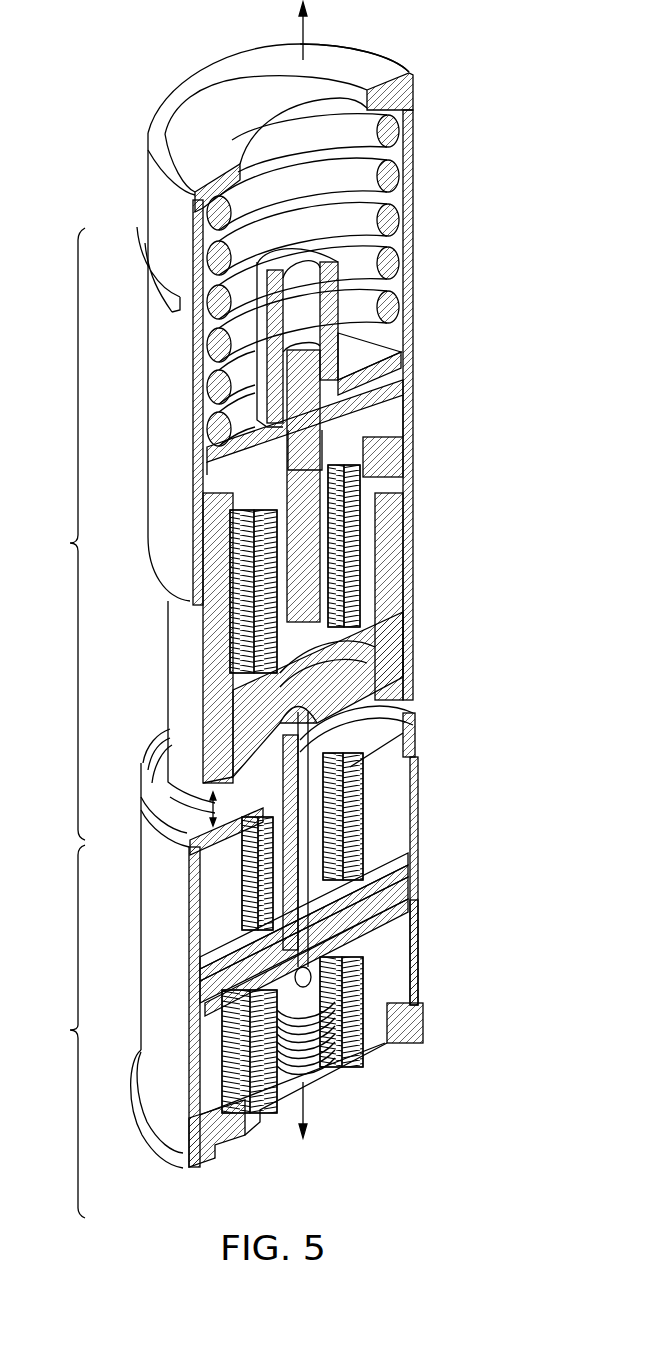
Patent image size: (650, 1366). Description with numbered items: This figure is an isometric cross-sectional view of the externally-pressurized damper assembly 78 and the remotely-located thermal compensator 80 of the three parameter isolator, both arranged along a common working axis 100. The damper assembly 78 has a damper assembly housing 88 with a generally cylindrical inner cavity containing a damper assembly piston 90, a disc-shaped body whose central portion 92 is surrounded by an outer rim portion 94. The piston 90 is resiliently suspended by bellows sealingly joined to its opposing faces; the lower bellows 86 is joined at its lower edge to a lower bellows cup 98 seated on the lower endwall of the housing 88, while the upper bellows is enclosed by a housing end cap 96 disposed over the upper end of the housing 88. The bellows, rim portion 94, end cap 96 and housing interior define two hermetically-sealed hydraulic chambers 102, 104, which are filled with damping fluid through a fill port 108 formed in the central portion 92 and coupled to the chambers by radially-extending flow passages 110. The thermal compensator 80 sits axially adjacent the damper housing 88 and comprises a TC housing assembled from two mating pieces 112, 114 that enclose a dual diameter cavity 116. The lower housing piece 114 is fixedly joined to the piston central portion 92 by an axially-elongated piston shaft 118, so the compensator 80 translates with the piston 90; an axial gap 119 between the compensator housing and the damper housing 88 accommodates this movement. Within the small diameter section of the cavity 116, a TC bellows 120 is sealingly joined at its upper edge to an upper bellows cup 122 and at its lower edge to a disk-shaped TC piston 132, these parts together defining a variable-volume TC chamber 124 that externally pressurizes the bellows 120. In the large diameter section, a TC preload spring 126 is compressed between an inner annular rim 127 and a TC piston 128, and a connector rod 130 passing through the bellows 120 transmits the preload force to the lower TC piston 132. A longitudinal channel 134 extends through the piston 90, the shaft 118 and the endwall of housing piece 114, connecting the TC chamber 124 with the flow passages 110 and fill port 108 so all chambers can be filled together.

The damper assembly 78 is at (57, 1031).
The thermal compensator 80 is at (57, 534).
The second bellows 86 is at (361, 1027).
The damper assembly housing 88 is at (413, 790).
The damper assembly piston 90 is at (397, 866).
The central portion 92 is at (371, 932).
The outer rim portion 94 is at (394, 906).
The housing end cap 96 is at (401, 745).
The lower bellows cup 98 is at (361, 1060).
The working axis 100 is at (298, 30).
The hydraulic chamber 102 is at (401, 800).
The hydraulic chamber 104 is at (401, 964).
The fill port 108 is at (318, 983).
The radially-extending flow passages 110 is at (388, 891).
The upper TC housing piece 112 is at (410, 118).
The lower TC housing piece 114 is at (394, 592).
The dual diameter cavity 116 is at (394, 377).
The piston shaft 118 is at (315, 753).
The axial gap 119 is at (207, 803).
The TC bellows 120 is at (348, 547).
The upper bellows cup 122 is at (384, 424).
The TC chamber 124 is at (358, 649).
The TC preload spring 126 is at (394, 262).
The inner annular rim 127 is at (358, 58).
The TC piston 128 is at (373, 347).
The connector rod 130 is at (311, 494).
The TC piston 132 is at (358, 623).
The longitudinal channel 134 is at (303, 817).